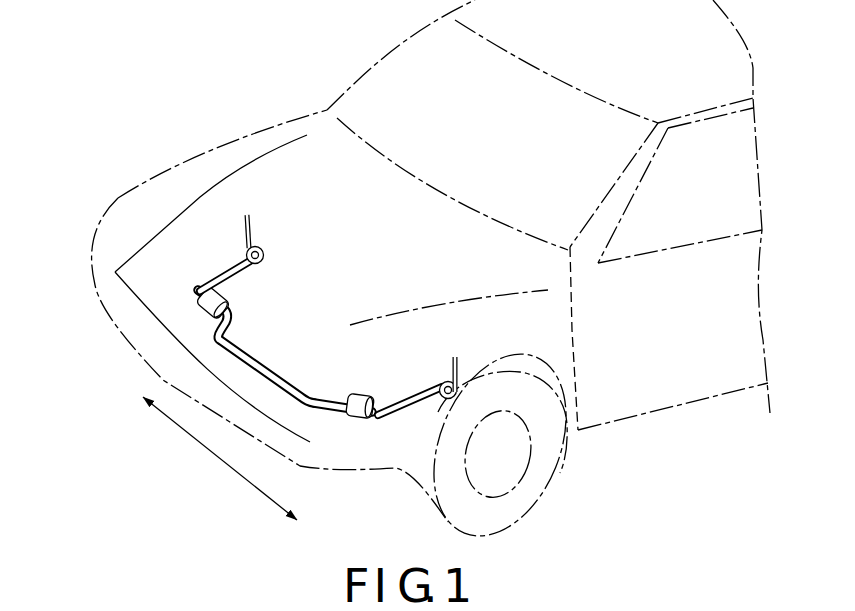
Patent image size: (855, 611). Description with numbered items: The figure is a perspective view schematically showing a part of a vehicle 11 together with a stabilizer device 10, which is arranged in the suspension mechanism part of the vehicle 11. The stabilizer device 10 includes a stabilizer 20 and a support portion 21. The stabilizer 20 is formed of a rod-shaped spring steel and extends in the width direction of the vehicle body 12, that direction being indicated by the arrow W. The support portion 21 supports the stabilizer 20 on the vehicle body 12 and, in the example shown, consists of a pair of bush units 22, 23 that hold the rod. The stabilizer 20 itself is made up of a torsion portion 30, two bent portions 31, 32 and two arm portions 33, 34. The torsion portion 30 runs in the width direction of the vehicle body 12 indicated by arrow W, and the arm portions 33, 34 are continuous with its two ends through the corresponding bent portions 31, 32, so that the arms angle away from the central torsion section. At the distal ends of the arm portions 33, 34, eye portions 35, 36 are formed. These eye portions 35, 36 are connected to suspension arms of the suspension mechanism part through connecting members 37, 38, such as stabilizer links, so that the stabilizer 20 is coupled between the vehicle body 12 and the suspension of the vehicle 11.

The stabilizer device 10 is at (285, 357).
The vehicle 11 is at (212, 82).
The vehicle body 12 is at (602, 428).
The stabilizer 20 is at (213, 404).
The support portion 21 is at (200, 315).
The bush unit 22 is at (230, 297).
The bush unit 23 is at (366, 396).
The torsion portion 30 is at (274, 369).
The bent portion 31 is at (233, 244).
The bent portion 32 is at (438, 419).
The arm portion 33 is at (217, 273).
The arm portion 34 is at (401, 401).
The eye portion 35 is at (264, 252).
The eye portion 36 is at (442, 381).
The connecting member 37 is at (250, 221).
The connecting member 38 is at (459, 362).
The arrow W is at (212, 456).